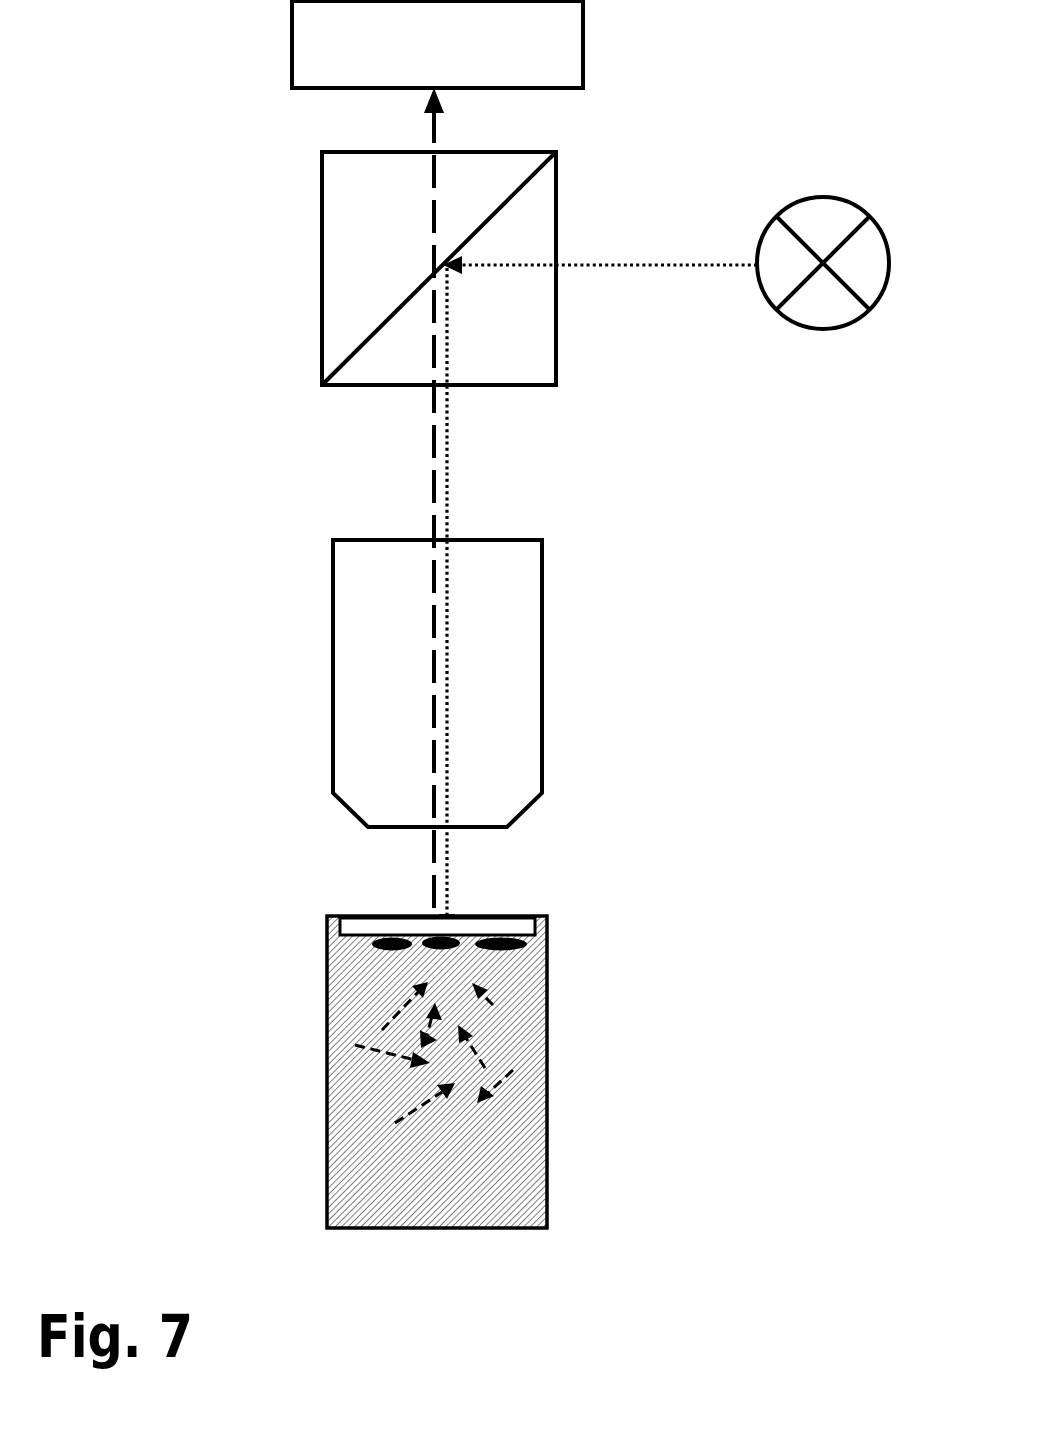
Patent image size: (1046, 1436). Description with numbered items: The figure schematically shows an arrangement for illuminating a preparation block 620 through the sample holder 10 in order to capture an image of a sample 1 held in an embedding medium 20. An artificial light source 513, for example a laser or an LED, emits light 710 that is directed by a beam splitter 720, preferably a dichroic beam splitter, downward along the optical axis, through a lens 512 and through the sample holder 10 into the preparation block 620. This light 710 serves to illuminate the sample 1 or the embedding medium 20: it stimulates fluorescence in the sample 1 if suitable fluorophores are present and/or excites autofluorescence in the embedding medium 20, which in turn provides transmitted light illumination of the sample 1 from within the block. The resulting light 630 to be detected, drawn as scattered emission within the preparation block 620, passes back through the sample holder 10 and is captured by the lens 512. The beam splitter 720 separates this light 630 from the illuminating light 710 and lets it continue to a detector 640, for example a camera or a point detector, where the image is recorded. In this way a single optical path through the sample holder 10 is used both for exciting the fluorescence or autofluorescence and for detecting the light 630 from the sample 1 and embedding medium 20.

The detector 640 is at (285, 63).
The beam splitter 720 is at (316, 312).
The artificial light source 513 is at (775, 307).
The light 710 is at (650, 263).
The lens 512 is at (543, 585).
The light to be detected 630 is at (435, 849).
The preparation block 620 is at (547, 990).
The embedding medium 20 is at (547, 1195).
The sample holder 10 is at (508, 918).
The sample 1 is at (445, 950).